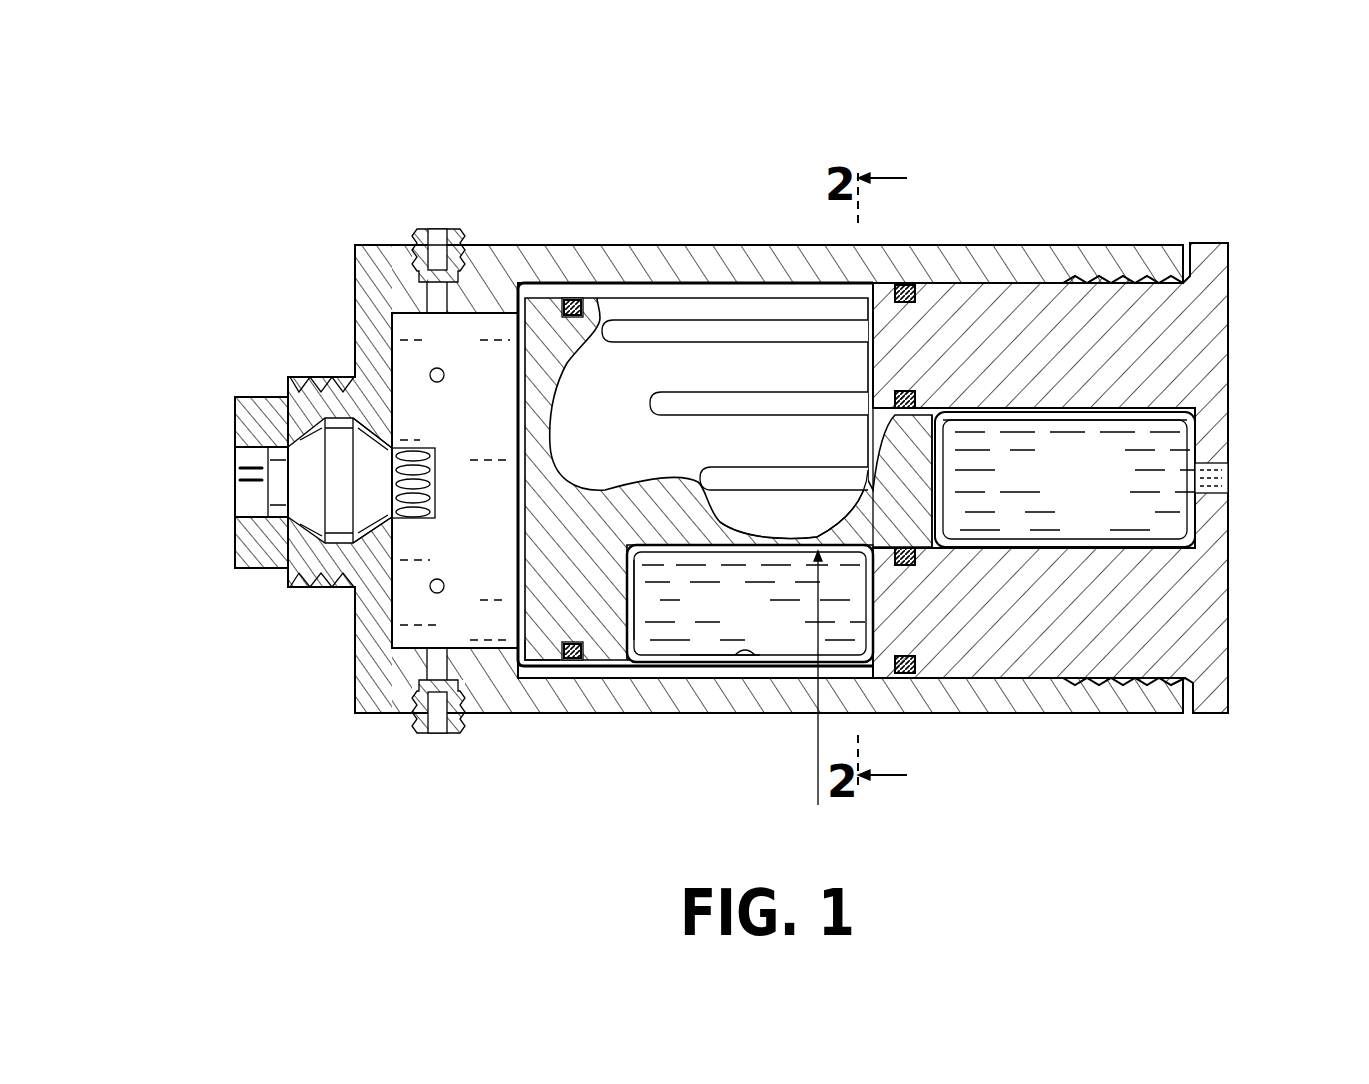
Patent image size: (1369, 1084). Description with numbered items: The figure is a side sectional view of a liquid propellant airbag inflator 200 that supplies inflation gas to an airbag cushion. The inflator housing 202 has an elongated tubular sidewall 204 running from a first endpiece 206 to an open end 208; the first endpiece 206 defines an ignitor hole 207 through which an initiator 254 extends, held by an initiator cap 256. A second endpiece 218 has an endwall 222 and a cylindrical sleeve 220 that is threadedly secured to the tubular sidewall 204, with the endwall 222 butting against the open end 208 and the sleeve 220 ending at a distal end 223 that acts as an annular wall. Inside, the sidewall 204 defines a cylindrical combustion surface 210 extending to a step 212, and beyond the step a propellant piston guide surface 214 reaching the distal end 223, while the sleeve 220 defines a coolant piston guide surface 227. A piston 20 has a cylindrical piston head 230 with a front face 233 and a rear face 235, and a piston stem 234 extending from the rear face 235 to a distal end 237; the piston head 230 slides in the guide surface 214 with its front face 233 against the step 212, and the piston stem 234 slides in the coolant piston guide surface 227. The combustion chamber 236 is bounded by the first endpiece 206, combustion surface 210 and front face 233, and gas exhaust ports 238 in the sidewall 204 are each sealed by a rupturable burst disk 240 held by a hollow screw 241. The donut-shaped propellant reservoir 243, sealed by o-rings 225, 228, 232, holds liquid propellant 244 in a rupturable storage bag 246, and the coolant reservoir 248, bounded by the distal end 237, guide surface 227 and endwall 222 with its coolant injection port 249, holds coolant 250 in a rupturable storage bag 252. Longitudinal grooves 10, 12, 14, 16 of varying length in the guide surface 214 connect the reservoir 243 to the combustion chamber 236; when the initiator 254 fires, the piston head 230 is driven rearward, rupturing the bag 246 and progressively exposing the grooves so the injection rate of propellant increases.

The longest longitudinal grooves 10 is at (660, 286).
The longitudinal groove 12 is at (696, 320).
The longitudinal groove 14 is at (746, 392).
The longitudinal groove 16 is at (784, 467).
The piston 20 is at (815, 697).
The liquid propellant airbag inflator 200 is at (752, 134).
The inflator housing 202 is at (1078, 238).
The tubular sidewall 204 is at (1183, 246).
The first endpiece 206 is at (356, 615).
The ignitor hole 207 is at (300, 512).
The open end 208 is at (1186, 262).
The combustion surface 210 is at (395, 346).
The step 212 is at (552, 661).
The propellant piston guide surface 214 is at (636, 666).
The second endpiece 218 is at (1228, 537).
The sleeve 220 is at (1012, 282).
The endwall 222 is at (1195, 716).
The distal end of sleeve 223 is at (866, 306).
The o-ring 225 is at (920, 677).
The coolant piston guide surface 227 is at (1128, 410).
The o-ring 228 is at (907, 474).
The piston head 230 is at (521, 284).
The o-ring 232 is at (576, 300).
The front face 233 is at (520, 656).
The piston stem 234 is at (858, 493).
The rear face 235 is at (634, 588).
The combustion chamber 236 is at (354, 389).
The distal end of piston stem 237 is at (933, 478).
The gas exhaust ports 238 is at (442, 303).
The rupturable burst disk 240 is at (420, 277).
The hollow screw 241 is at (422, 231).
The propellant reservoir 243 is at (712, 663).
The liquid propellant 244 is at (784, 613).
The rupturable storage bag 246 is at (757, 663).
The coolant reservoir 248 is at (1197, 410).
The coolant injection port 249 is at (1229, 480).
The coolant 250 is at (1079, 485).
The rupturable storage bag 252 is at (1162, 413).
The initiator 254 is at (268, 462).
The initiator cap 256 is at (238, 548).